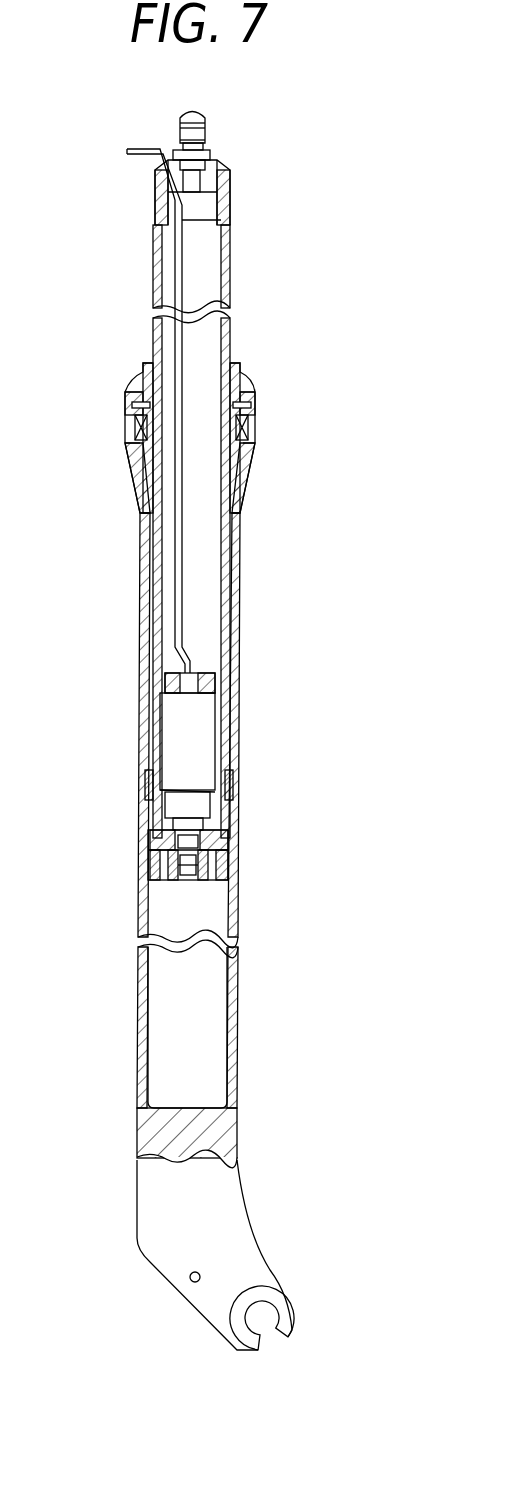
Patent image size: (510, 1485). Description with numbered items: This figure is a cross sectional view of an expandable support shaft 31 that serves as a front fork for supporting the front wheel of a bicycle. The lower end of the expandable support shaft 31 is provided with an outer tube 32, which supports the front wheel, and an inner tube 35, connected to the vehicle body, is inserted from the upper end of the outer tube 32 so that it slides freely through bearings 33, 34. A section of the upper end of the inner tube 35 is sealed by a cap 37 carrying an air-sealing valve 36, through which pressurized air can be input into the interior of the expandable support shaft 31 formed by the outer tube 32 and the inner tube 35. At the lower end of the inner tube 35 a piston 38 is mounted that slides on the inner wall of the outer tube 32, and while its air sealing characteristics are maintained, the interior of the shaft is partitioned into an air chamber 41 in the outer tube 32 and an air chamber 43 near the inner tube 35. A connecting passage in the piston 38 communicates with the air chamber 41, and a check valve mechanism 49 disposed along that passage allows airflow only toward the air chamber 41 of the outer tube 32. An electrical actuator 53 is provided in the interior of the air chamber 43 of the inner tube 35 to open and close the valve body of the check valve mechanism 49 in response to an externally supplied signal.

The expandable support shaft 31 is at (241, 159).
The outer tube 32 is at (141, 559).
The bearing 33 is at (247, 466).
The bearing 34 is at (147, 785).
The inner tube 35 is at (153, 278).
The air-sealing valve 36 is at (182, 138).
The cap 37 is at (218, 183).
The piston 38 is at (227, 843).
The air chamber 41 is at (205, 1043).
The air chamber 43 is at (161, 643).
The check valve mechanism 49 is at (182, 873).
The electrical actuator 53 is at (202, 737).